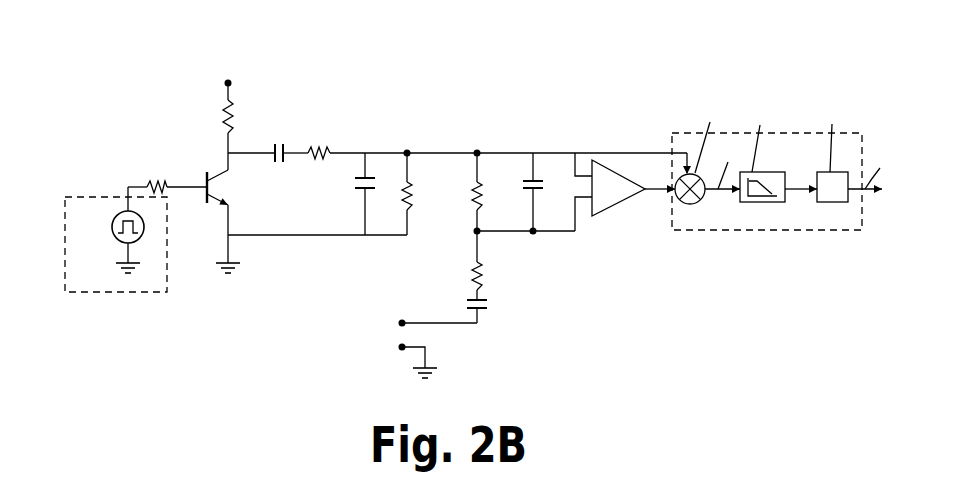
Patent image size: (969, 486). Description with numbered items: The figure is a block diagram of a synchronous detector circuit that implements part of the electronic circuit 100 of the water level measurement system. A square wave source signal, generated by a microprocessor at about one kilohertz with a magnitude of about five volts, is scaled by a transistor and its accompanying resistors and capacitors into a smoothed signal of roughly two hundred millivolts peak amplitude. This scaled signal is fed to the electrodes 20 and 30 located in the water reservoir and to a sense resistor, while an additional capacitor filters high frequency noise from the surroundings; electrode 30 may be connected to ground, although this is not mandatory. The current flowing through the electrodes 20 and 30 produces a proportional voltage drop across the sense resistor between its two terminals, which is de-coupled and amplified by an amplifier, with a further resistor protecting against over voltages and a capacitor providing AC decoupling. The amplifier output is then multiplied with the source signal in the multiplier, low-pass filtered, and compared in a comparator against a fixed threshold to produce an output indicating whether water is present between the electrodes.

The electronic circuit 100 is at (442, 100).
The electrode 20 is at (430, 311).
The electrode 30 is at (410, 362).